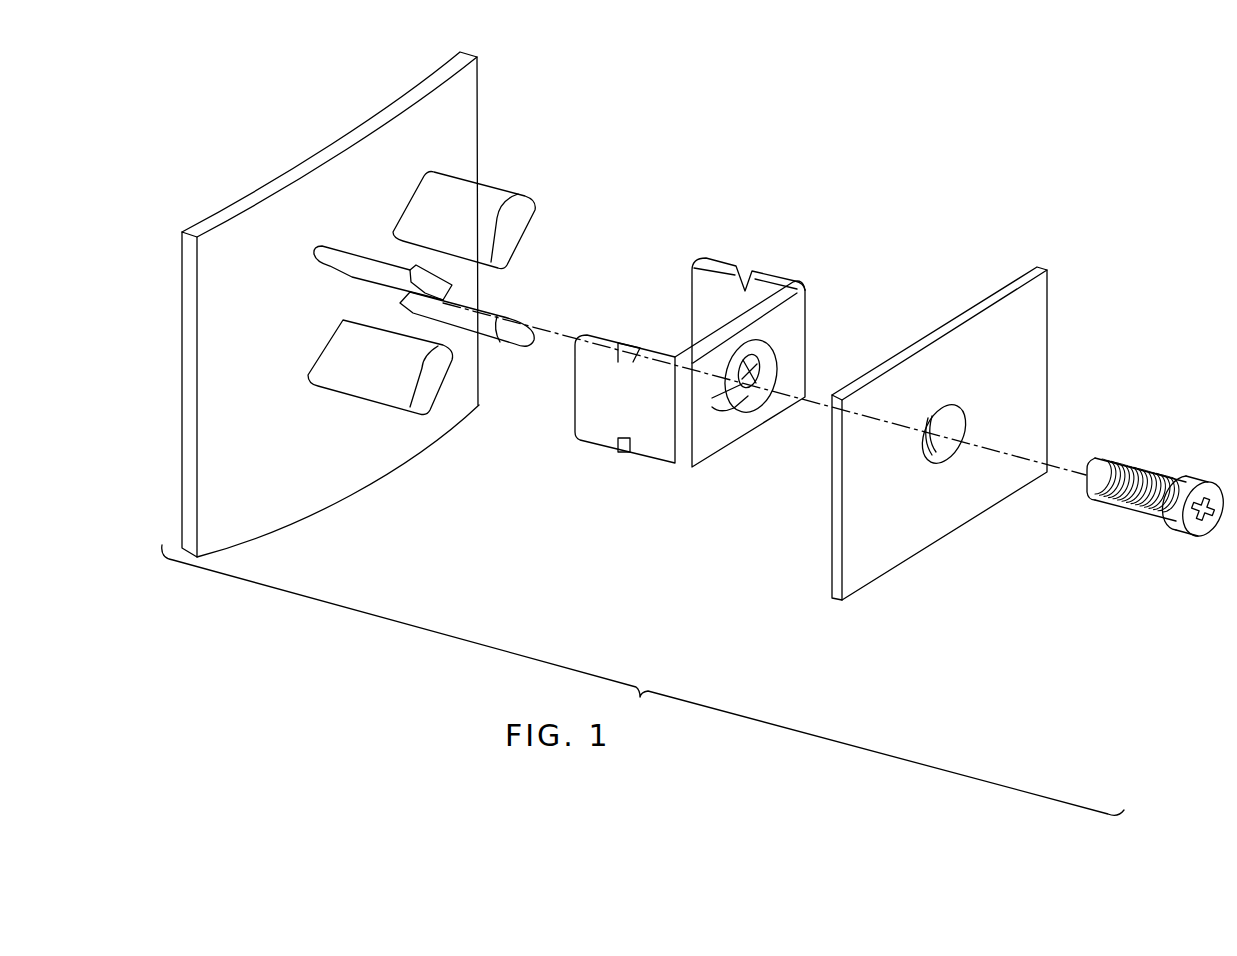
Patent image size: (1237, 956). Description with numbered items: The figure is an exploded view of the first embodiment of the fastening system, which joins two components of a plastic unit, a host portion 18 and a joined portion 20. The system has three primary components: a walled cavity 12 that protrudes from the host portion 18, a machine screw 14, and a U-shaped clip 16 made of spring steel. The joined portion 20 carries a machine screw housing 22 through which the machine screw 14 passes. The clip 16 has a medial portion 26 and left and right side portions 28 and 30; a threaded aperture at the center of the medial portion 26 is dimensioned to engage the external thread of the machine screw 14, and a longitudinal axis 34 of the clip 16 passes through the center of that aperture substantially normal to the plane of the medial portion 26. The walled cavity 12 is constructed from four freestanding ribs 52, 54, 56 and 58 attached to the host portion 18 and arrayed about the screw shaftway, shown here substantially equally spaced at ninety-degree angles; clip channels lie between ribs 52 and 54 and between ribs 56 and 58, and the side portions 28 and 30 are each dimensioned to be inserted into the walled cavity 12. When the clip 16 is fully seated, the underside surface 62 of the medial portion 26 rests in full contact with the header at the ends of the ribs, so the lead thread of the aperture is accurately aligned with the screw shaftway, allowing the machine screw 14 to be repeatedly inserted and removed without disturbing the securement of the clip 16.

The walled cavity 12 is at (456, 315).
The machine screw 14 is at (1197, 478).
The U-shaped clip 16 is at (713, 362).
The host portion 18 is at (245, 463).
The joined portion 20 is at (939, 451).
The machine screw housing 22 is at (963, 412).
The medial portion 26 is at (763, 409).
The left side portion 28 is at (723, 282).
The right side portion 30 is at (602, 422).
The longitudinal axis 34 is at (1065, 477).
The rib 52 is at (500, 212).
The rib 54 is at (353, 258).
The rib 56 is at (405, 398).
The rib 58 is at (497, 344).
The underside surface 62 is at (735, 318).